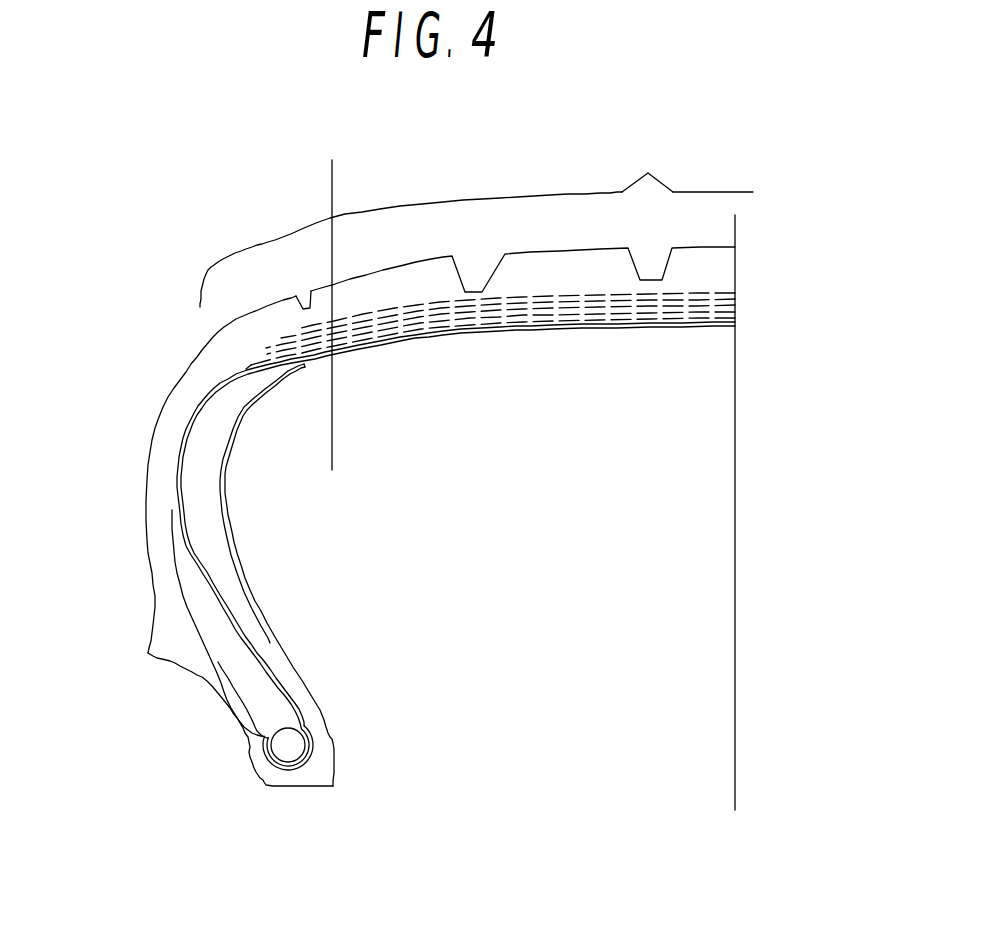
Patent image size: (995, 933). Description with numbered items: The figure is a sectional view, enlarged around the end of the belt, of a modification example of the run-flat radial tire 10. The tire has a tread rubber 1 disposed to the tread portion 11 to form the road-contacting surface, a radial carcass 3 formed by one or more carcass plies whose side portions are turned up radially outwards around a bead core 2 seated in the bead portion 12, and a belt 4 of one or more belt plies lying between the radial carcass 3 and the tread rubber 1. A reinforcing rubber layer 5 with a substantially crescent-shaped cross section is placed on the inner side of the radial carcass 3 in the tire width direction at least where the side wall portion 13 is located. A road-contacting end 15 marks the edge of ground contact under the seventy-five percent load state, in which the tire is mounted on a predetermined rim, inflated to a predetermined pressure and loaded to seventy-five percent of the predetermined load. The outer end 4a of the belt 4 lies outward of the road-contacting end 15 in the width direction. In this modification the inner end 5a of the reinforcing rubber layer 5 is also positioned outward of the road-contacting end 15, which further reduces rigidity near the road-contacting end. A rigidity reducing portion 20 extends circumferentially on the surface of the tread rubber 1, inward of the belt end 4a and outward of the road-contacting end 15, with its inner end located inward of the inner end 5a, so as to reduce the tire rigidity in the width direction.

The tread rubber 1 is at (523, 262).
The bead core 2 is at (329, 733).
The radial carcass 3 is at (453, 546).
The belt 4 is at (493, 282).
The outer end of the belt 4a is at (203, 348).
The reinforcing rubber layer 5 is at (272, 575).
The inner end of the reinforcing rubber layer 5a is at (305, 399).
The run-flat radial tire 10 is at (290, 216).
The tread portion 11 is at (647, 167).
The bead portion 12 is at (232, 725).
The side wall portion 13 is at (172, 475).
The road-contacting end 15 is at (359, 291).
The rigidity reducing portion 20 is at (292, 277).